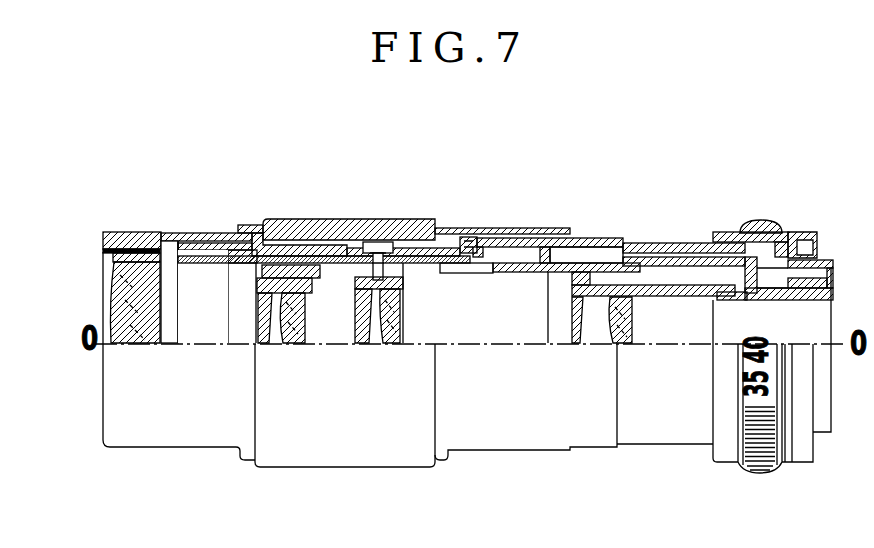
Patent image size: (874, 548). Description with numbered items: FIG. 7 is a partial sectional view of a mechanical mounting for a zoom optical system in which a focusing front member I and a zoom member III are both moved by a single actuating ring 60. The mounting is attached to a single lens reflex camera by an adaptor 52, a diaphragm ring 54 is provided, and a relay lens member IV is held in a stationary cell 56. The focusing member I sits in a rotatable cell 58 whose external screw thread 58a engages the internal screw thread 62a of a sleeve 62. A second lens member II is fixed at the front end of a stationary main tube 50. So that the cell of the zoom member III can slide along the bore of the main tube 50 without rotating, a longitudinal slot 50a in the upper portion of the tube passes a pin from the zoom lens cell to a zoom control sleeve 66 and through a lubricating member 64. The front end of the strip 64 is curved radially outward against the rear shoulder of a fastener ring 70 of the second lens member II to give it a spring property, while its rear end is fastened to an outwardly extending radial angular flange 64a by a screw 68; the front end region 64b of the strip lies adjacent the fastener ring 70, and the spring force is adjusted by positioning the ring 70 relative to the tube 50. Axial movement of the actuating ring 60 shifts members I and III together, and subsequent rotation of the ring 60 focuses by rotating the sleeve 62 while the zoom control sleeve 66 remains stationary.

The stationary main tube 50 is at (520, 273).
The longitudinal slot 50a is at (470, 270).
The adaptor 52 is at (831, 262).
The diaphragm ring 54 is at (758, 221).
The stationary cell 56 is at (665, 291).
The rotatable cell 58 is at (112, 258).
The external screw thread 58a is at (106, 252).
The actuating ring 60 is at (422, 219).
The sleeve 62 is at (124, 242).
The internal screw thread 62a is at (153, 250).
The lubricating member 64 is at (432, 264).
The radial angular flange 64a is at (468, 238).
The cam sleeve front end 64b is at (263, 237).
The zoom control sleeve 66 is at (336, 245).
The screw 68 is at (483, 247).
The fastener ring 70 is at (236, 303).
The focusing front member I is at (138, 332).
The second lens member II is at (291, 333).
The zoom member III is at (383, 333).
The relay lens member IV is at (603, 333).